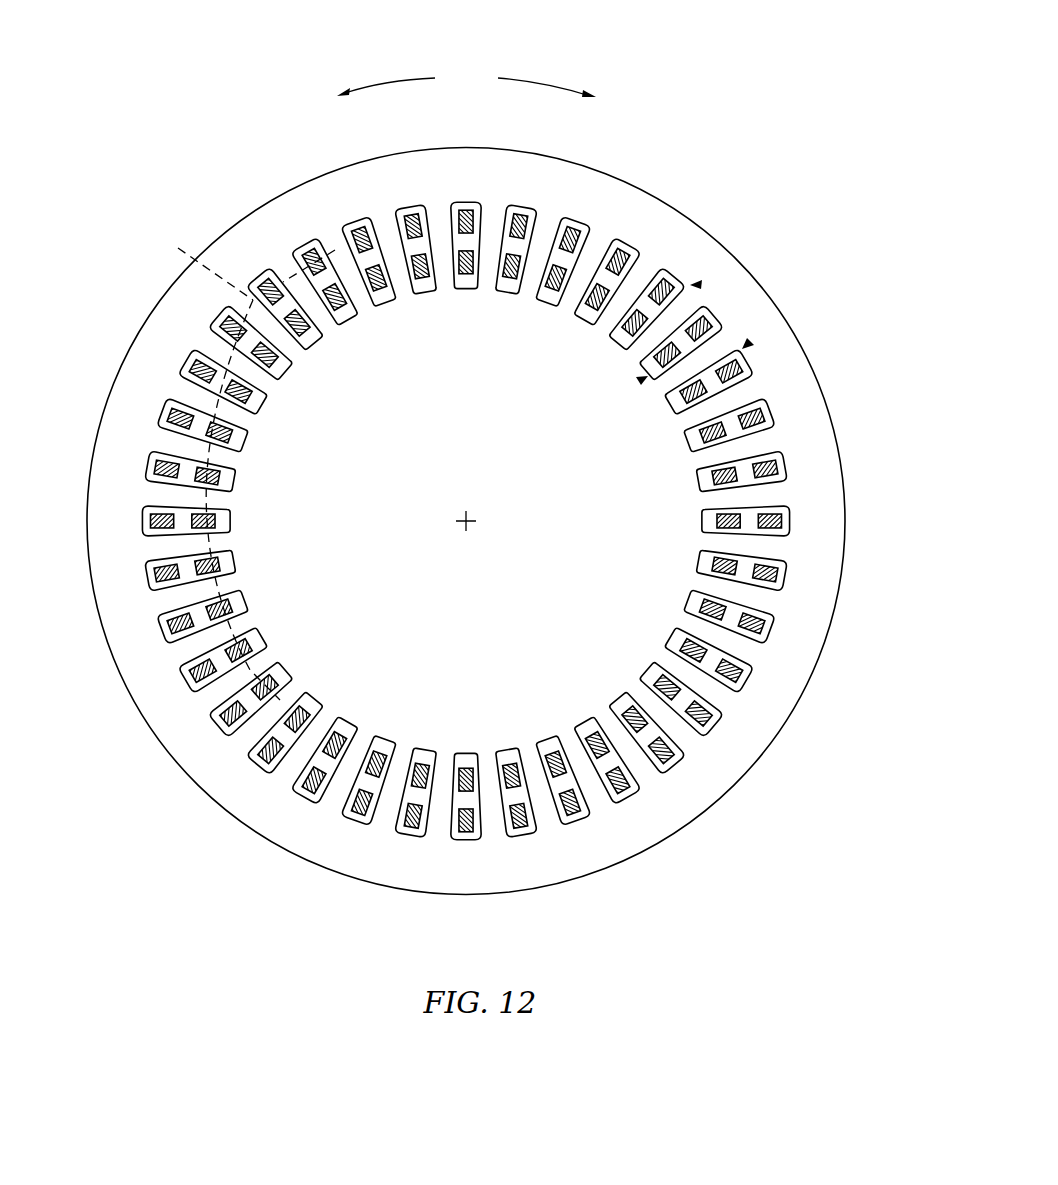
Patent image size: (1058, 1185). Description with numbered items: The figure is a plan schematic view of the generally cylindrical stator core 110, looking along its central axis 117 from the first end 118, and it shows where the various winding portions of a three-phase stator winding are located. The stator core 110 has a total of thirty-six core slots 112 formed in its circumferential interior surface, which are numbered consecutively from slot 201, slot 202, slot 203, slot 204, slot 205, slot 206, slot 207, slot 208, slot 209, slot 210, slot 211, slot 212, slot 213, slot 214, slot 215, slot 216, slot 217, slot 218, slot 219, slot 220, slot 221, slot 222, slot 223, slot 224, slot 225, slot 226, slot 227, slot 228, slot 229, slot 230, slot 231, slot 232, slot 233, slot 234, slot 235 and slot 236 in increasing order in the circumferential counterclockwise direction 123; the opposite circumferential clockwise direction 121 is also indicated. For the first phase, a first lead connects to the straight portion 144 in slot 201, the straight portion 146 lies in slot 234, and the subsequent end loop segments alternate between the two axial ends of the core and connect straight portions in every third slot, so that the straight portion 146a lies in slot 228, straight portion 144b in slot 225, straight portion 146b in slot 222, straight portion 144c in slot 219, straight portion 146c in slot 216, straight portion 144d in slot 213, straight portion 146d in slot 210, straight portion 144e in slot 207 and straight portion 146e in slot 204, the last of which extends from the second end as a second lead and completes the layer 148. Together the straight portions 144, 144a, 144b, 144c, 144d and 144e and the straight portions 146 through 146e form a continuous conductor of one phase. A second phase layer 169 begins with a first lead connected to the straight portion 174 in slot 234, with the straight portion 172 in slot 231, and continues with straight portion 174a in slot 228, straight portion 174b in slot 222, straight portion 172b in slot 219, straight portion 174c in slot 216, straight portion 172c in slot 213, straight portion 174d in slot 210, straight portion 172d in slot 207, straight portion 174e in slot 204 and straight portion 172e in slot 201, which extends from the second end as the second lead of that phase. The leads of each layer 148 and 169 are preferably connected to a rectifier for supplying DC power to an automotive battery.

The stator core 110 is at (672, 76).
The core slots 112 is at (700, 284).
The central axis 117 is at (462, 515).
The first end 118 is at (258, 218).
The arrow indicating circumferential clockwise direction 121 is at (545, 80).
The arrow indicating circumferential counterclockwise direction 123 is at (380, 82).
The straight portion 144 is at (146, 532).
The straight portion 144a is at (330, 247).
The straight portion 144b is at (632, 262).
The straight portion 144c is at (786, 535).
The straight portion 144d is at (660, 790).
The straight portion 144e is at (303, 805).
The straight portion 146 is at (180, 364).
The straight portion 146a is at (455, 205).
The straight portion 146b is at (732, 377).
The straight portion 146c is at (750, 682).
The straight portion 146d is at (482, 840).
The straight portion 146e is at (185, 678).
The circumferential layer 148 is at (201, 259).
The layer 169 is at (250, 468).
The straight portion 172 is at (346, 312).
The straight portion 172b is at (705, 521).
The straight portion 172c is at (597, 738).
The straight portion 172d is at (360, 745).
The straight portion 172e is at (214, 521).
The straight portion 174 is at (248, 392).
The straight portion 174a is at (468, 278).
The straight portion 174b is at (683, 397).
The straight portion 174c is at (690, 640).
The straight portion 174d is at (468, 770).
The straight portion 174e is at (250, 647).
The slot number 201 is at (162, 521).
The slot number 202 is at (166, 569).
The slot number 203 is at (180, 618).
The slot number 204 is at (202, 666).
The slot number 205 is at (234, 708).
The slot number 206 is at (270, 743).
The slot number 207 is at (312, 775).
The slot number 208 is at (360, 797).
The slot number 209 is at (409, 812).
The slot number 210 is at (462, 819).
The slot number 211 is at (518, 811).
The slot number 212 is at (567, 797).
The slot number 213 is at (614, 776).
The slot number 214 is at (658, 745).
The slot number 215 is at (696, 708).
The slot number 216 is at (723, 666).
The slot number 217 is at (746, 617).
The slot number 218 is at (764, 572).
The slot number 219 is at (772, 522).
The slot number 220 is at (766, 472).
The slot number 221 is at (751, 425).
The slot number 222 is at (727, 378).
The slot number 223 is at (698, 335).
The slot number 224 is at (661, 299).
The slot number 225 is at (616, 268).
The slot number 226 is at (569, 246).
The slot number 227 is at (521, 232).
The slot number 228 is at (468, 227).
The slot number 229 is at (414, 231).
The slot number 230 is at (361, 245).
The slot number 231 is at (318, 266).
The slot number 232 is at (274, 297).
The slot number 233 is at (236, 333).
The slot number 234 is at (203, 377).
The slot number 235 is at (178, 423).
The slot number 236 is at (167, 472).